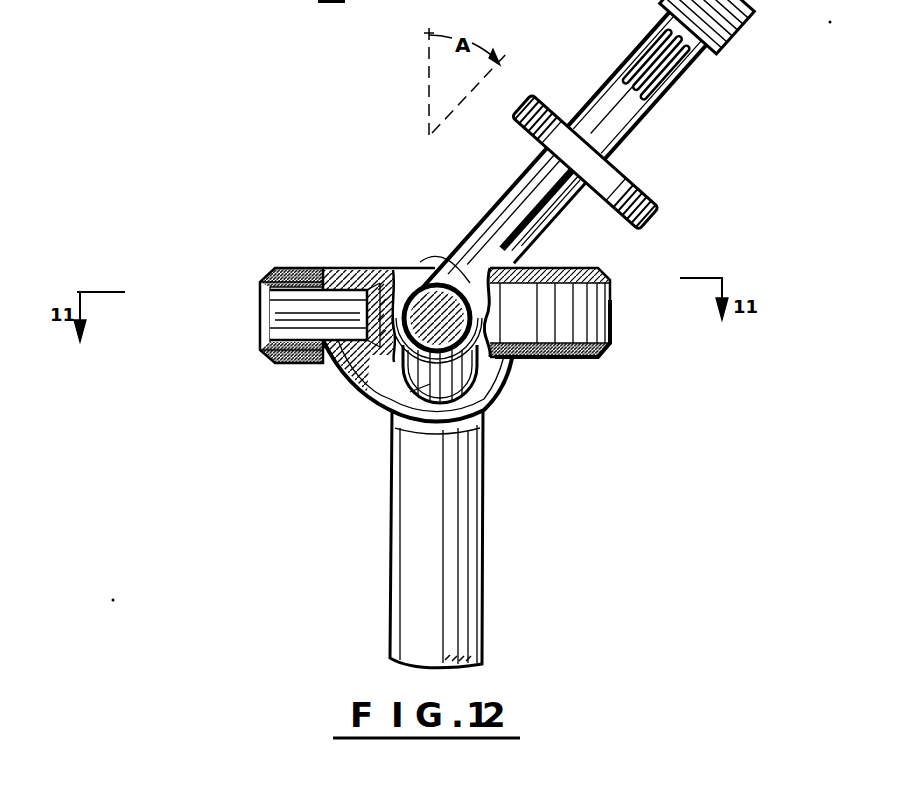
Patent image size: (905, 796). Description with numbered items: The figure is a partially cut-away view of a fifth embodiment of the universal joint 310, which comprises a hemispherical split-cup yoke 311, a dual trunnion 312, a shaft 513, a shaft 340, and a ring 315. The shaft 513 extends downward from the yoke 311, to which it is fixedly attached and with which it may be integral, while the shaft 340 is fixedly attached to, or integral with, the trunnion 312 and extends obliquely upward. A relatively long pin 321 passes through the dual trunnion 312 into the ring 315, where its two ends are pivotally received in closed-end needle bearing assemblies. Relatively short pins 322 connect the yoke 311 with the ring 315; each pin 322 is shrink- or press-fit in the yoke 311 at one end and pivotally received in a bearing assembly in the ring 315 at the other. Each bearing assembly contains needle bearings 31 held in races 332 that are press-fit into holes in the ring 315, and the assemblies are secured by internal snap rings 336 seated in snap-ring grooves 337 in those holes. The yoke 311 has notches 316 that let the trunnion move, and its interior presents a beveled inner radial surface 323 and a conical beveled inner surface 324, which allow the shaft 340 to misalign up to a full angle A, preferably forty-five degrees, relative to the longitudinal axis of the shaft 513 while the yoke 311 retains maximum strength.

The universal joint 310 is at (475, 334).
The hemispherical split-cup yoke 311 is at (505, 385).
The dual trunnion 312 is at (412, 300).
The ring 315 is at (600, 268).
The notches in yoke 316 is at (472, 243).
The long pin 321 is at (437, 288).
The short pin 322 is at (290, 312).
The beveled inner radial surface of yoke 323 is at (352, 300).
The beveled inner surface of yoke 324 is at (388, 400).
The needle bearings 31 is at (288, 306).
The races 332 is at (280, 268).
The internal snap rings 336 is at (272, 343).
The snap-ring grooves 337 is at (271, 295).
The shaft 340 is at (663, 116).
The shaft 513 is at (390, 533).